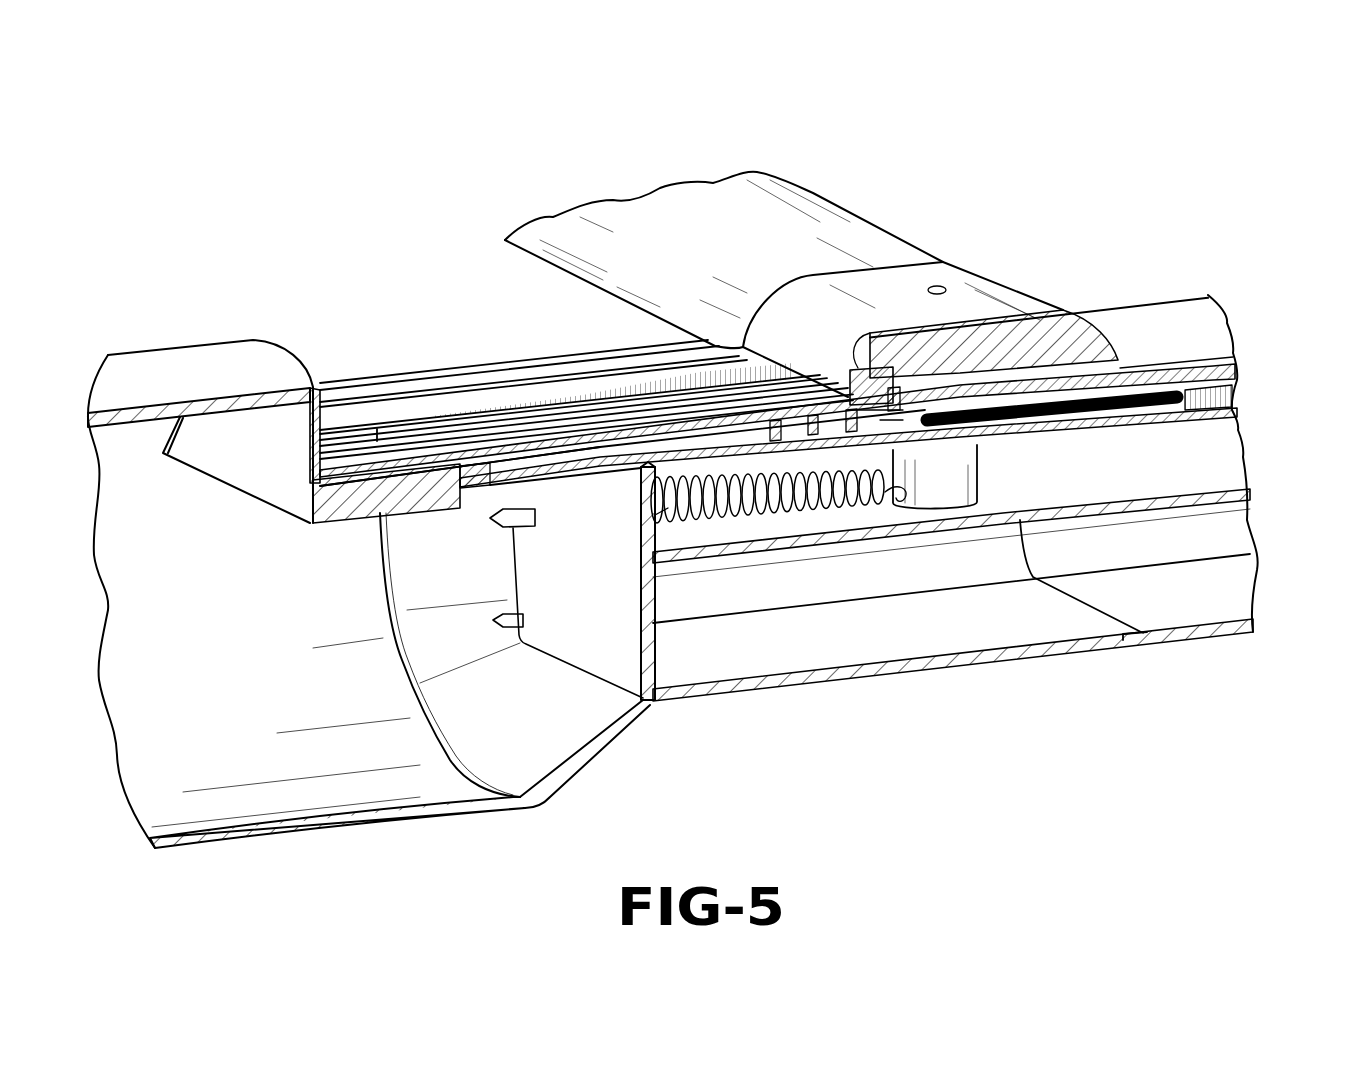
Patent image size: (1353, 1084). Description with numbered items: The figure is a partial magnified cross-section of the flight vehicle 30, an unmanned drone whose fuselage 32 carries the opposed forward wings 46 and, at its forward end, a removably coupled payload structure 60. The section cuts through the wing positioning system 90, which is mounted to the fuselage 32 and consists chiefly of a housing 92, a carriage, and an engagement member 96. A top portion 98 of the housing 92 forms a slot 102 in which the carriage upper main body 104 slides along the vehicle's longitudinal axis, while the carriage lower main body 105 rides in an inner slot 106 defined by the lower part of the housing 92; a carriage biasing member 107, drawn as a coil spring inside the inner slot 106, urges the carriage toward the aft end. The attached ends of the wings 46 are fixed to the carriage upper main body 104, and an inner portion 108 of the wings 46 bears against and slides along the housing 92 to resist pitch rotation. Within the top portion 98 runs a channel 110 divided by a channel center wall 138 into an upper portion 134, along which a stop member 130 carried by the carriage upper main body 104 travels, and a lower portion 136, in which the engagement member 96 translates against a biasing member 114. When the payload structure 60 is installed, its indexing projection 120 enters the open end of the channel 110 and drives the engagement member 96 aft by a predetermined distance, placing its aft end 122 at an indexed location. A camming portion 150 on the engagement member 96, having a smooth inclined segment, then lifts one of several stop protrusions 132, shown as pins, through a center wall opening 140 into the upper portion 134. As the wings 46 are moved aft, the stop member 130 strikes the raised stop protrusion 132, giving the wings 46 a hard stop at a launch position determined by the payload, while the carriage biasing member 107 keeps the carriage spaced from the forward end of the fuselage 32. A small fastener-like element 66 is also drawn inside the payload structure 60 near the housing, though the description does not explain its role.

The flight vehicle 30 is at (368, 188).
The fuselage 32 is at (1180, 308).
The forward wings 46 is at (795, 200).
The payload structure 60 is at (577, 757).
The retainer pin 66 is at (533, 513).
The wing positioning system 90 is at (1040, 293).
The housing 92 is at (535, 363).
The engagement member 96 is at (757, 450).
The top portion 98 is at (485, 370).
The slot 102 is at (407, 417).
The carriage upper main body 104 is at (985, 285).
The carriage lower main body 105 is at (960, 485).
The inner slot 106 is at (1152, 460).
The carriage biasing member 107 is at (680, 520).
The inner portion 108 is at (895, 242).
The channel 110 is at (720, 480).
The biasing member 114 is at (1160, 387).
The indexing projection 120 is at (350, 440).
The aft end 122 is at (893, 427).
The stop member 130 is at (857, 375).
The stop protrusion 132 is at (908, 385).
The upper portion 134 is at (710, 418).
The lower portion 136 is at (493, 463).
The channel center wall 138 is at (440, 463).
The center wall opening 140 is at (835, 425).
The camming portion 150 is at (900, 432).